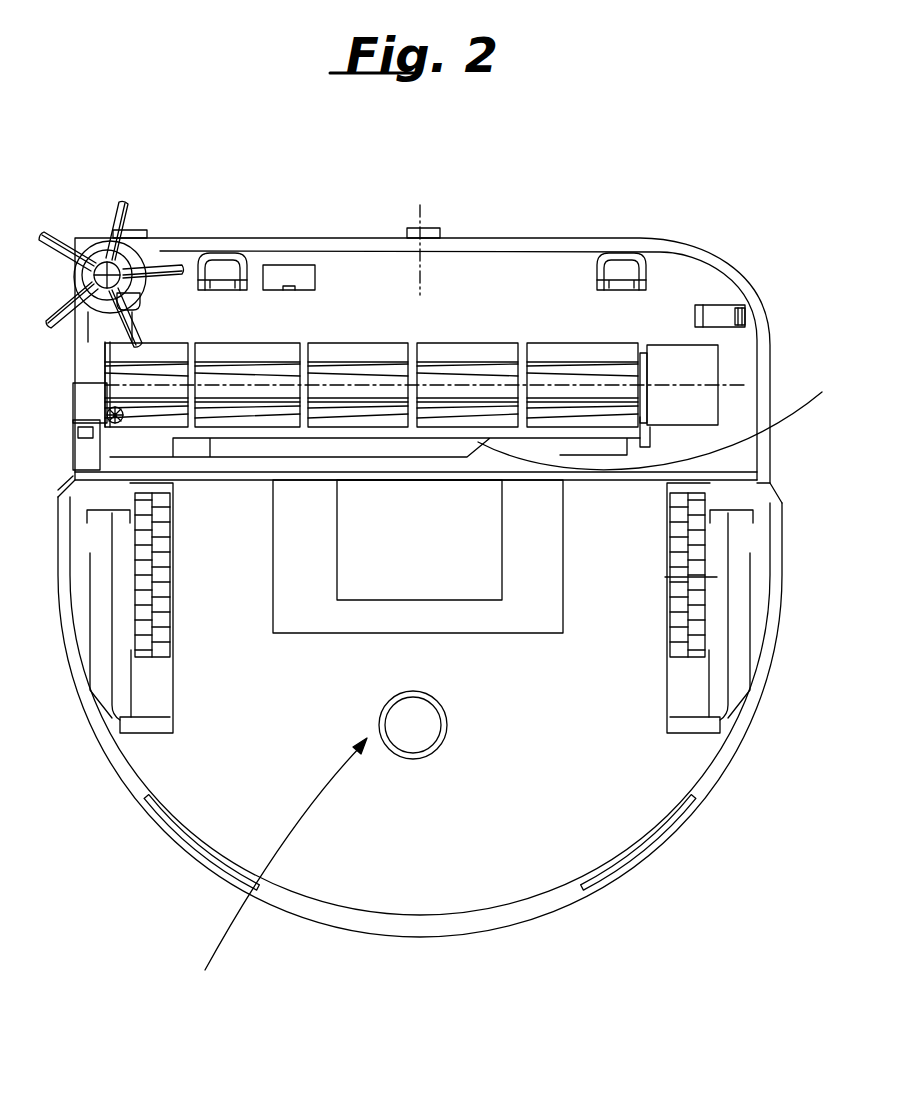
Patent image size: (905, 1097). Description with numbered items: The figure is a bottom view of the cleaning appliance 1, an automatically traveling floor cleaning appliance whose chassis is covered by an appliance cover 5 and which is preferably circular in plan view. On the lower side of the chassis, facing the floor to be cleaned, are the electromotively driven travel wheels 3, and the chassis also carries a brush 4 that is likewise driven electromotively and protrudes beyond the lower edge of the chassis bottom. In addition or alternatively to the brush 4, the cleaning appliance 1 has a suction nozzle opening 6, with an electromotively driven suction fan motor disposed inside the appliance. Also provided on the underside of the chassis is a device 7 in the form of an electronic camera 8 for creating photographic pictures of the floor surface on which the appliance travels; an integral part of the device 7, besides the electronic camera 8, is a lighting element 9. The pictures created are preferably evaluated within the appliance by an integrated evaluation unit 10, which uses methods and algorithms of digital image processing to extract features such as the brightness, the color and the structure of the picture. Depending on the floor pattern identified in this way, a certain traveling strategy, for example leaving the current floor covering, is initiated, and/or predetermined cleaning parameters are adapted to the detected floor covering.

The cleaning appliance 1 is at (648, 135).
The travel wheels 3 is at (150, 600).
The brush 4 is at (598, 366).
The appliance cover 5 is at (520, 923).
The suction nozzle opening 6 is at (462, 419).
The device 7 is at (274, 874).
The electronic camera 8 is at (413, 725).
The lighting element 9 is at (446, 740).
The evaluation unit 10 is at (537, 605).